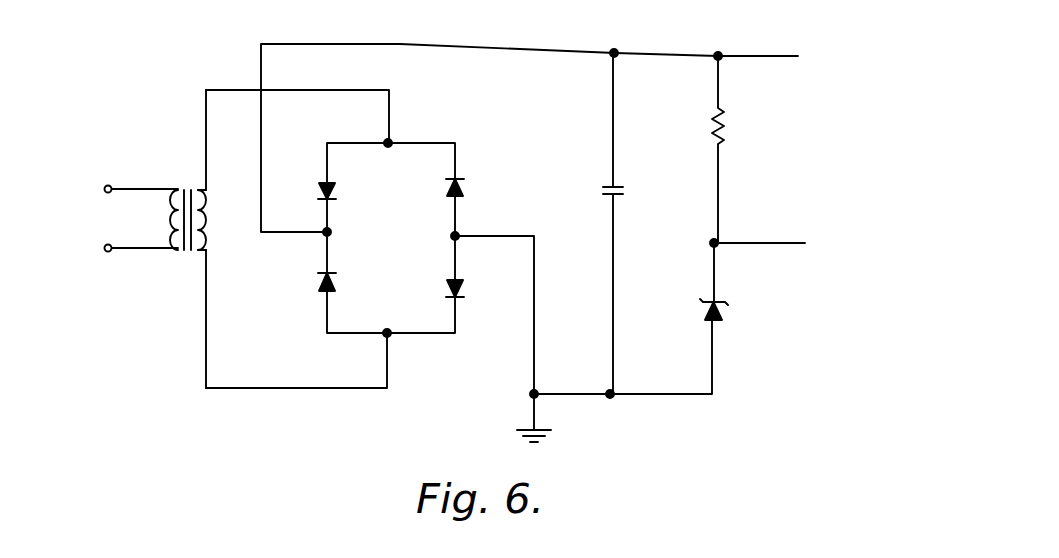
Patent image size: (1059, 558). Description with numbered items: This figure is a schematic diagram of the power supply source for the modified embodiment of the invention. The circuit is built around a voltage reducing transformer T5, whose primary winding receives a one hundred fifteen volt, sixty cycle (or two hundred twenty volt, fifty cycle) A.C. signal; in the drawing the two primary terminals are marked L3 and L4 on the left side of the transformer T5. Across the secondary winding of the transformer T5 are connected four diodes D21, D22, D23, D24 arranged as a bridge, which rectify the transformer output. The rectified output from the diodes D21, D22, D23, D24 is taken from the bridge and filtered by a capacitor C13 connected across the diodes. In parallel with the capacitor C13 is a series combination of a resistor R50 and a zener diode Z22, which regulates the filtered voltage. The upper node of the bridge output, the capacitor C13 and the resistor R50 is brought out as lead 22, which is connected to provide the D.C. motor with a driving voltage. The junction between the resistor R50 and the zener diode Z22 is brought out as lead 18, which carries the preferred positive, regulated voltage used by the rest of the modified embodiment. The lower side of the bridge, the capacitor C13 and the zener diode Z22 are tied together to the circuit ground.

The lead 22 is at (765, 56).
The lead 18 is at (752, 243).
The voltage reducing transformer T5 is at (188, 205).
The AC input terminal L3 is at (120, 190).
The AC input terminal L4 is at (120, 249).
The diode D21 is at (349, 190).
The diode D22 is at (349, 284).
The diode D23 is at (477, 189).
The diode D24 is at (477, 286).
The capacitor C13 is at (633, 223).
The resistor R50 is at (738, 149).
The zener diode Z22 is at (731, 283).